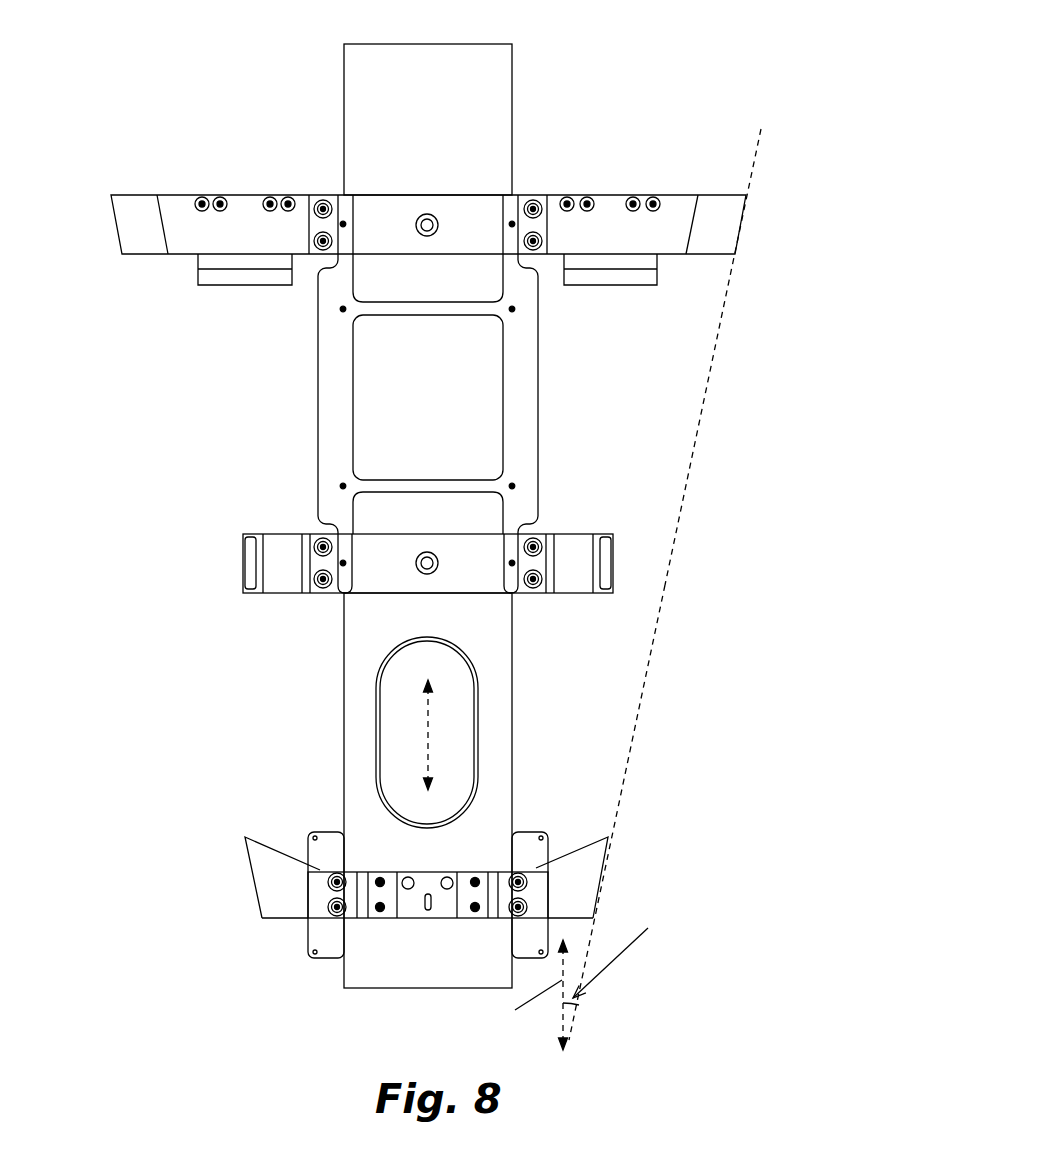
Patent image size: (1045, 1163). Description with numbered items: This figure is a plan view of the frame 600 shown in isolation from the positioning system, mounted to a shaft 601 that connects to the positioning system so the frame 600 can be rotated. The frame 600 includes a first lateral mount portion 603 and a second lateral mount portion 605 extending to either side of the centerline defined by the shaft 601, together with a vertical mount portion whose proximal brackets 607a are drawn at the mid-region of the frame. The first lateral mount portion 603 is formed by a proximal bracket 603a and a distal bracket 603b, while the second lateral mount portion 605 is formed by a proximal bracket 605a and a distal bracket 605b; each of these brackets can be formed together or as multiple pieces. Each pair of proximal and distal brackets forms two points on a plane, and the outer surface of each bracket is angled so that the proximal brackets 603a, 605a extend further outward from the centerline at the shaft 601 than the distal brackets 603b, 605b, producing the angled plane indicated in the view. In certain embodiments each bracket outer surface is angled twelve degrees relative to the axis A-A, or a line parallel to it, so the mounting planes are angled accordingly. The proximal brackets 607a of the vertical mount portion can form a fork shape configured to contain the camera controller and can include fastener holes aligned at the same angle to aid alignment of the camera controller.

The frame 600 is at (195, 117).
The shaft 601 is at (494, 98).
The first lateral mount portion 603 is at (765, 280).
The proximal bracket 603a is at (738, 240).
The distal bracket 603b is at (598, 887).
The second lateral mount portion 605 is at (243, 815).
The proximal bracket 605a is at (115, 228).
The distal bracket 605b is at (256, 882).
The proximal brackets 607a is at (250, 553).